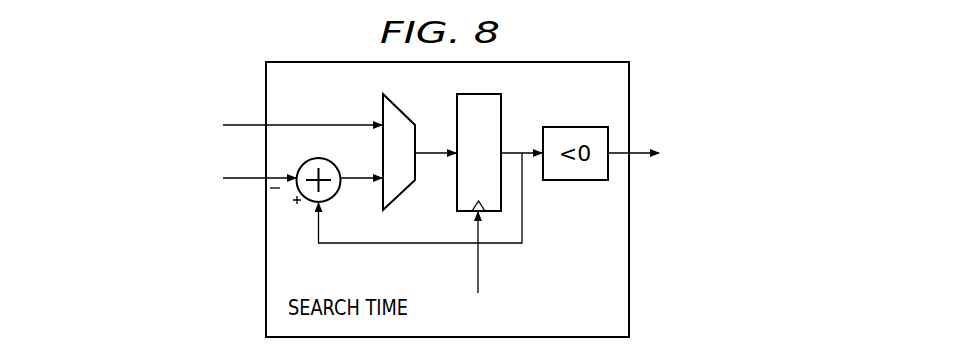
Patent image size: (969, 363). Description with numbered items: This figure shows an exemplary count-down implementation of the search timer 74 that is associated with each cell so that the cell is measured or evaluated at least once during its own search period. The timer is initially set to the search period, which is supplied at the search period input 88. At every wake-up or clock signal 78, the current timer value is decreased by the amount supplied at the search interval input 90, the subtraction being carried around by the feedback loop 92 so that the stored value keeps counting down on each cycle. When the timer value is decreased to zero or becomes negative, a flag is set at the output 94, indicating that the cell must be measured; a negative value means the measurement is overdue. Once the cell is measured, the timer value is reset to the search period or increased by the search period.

The search timer 74 is at (568, 62).
The clock signal 78 is at (478, 283).
The search period input 88 is at (313, 124).
The search interval input 90 is at (243, 178).
The feedback loop 92 is at (522, 212).
The flag output 94 is at (640, 151).